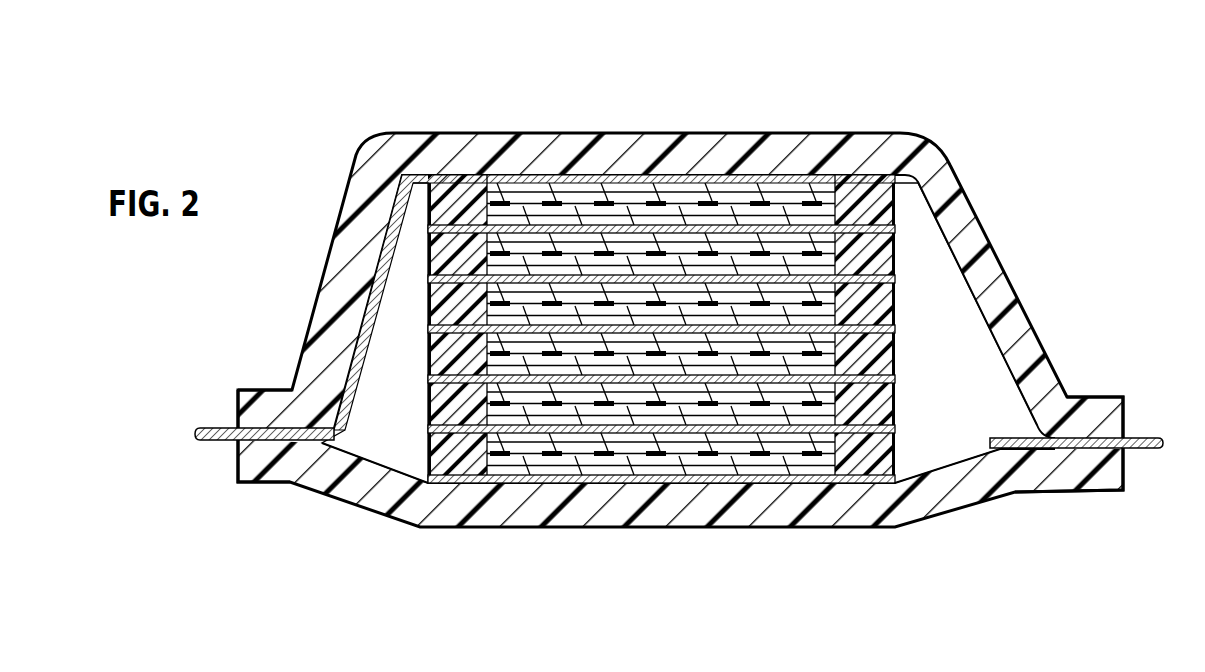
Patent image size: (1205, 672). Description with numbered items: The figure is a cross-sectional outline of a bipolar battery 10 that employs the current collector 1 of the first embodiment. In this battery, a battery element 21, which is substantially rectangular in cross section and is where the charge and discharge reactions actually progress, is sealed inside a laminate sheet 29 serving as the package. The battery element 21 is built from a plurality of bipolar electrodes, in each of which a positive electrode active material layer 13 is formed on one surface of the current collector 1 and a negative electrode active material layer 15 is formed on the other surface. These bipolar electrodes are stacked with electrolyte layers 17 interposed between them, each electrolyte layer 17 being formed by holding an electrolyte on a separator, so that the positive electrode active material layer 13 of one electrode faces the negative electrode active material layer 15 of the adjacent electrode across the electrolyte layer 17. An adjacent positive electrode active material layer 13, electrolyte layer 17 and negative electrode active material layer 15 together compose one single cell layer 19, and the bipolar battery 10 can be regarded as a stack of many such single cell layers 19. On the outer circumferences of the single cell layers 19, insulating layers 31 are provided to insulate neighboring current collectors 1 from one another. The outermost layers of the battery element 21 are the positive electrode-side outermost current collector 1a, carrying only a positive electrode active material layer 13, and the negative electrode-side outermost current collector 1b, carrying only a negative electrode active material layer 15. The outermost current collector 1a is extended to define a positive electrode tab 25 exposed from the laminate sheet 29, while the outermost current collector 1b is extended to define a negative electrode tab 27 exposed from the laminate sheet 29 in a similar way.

The bipolar battery 10 is at (300, 129).
The current collector 1 is at (737, 227).
The positive electrode-side outermost current collector 1a is at (797, 175).
The negative electrode-side outermost current collector 1b is at (771, 488).
The positive electrode active material layer 13 is at (537, 243).
The negative electrode active material layer 15 is at (673, 267).
The electrolyte layer 17 is at (613, 250).
The single cell layer 19 is at (693, 80).
The battery element 21 is at (911, 338).
The positive electrode tab 25 is at (213, 427).
The negative electrode tab 27 is at (1143, 437).
The laminate sheet 29 is at (1097, 552).
The insulating layer 31 is at (867, 203).